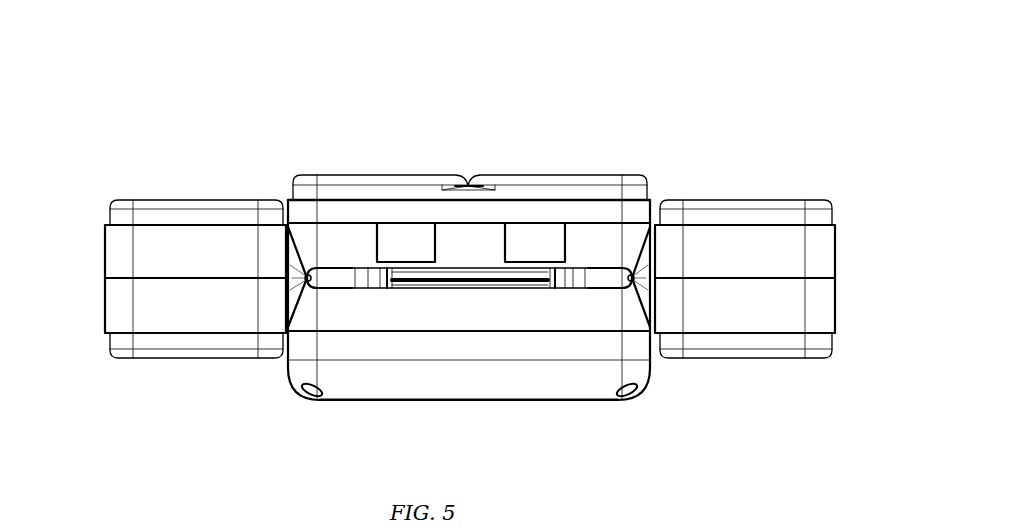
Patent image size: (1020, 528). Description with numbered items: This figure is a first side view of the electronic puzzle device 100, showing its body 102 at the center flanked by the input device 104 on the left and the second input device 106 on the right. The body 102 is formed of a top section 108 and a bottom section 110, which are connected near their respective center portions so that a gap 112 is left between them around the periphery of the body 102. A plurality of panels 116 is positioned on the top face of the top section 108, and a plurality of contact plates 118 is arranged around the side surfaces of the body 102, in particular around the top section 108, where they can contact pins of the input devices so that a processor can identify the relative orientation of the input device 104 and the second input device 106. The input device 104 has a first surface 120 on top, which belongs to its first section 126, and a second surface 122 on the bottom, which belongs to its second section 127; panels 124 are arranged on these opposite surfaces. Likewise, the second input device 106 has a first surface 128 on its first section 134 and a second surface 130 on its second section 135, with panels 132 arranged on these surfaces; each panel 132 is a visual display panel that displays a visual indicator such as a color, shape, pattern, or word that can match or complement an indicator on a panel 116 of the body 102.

The electronic puzzle device 100 is at (176, 43).
The body 102 is at (512, 175).
The input device 104 is at (115, 200).
The second input device 106 is at (835, 265).
The top section 108 is at (590, 240).
The bottom section 110 is at (537, 380).
The gap 112 is at (420, 282).
The panels 116 is at (357, 182).
The contact plates 118 is at (390, 248).
The first surface 120 is at (175, 200).
The second surface 122 is at (115, 358).
The panels 124 is at (125, 214).
The first section 126 is at (122, 258).
The second section 127 is at (120, 305).
The first surface 128 is at (825, 205).
The second surface 130 is at (822, 358).
The panels 132 is at (820, 208).
The first section 134 is at (813, 242).
The second section 135 is at (825, 315).